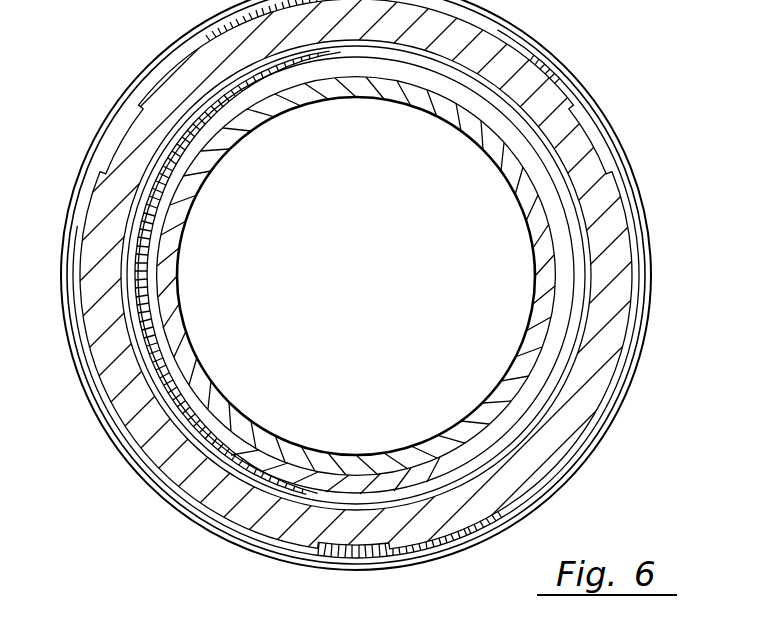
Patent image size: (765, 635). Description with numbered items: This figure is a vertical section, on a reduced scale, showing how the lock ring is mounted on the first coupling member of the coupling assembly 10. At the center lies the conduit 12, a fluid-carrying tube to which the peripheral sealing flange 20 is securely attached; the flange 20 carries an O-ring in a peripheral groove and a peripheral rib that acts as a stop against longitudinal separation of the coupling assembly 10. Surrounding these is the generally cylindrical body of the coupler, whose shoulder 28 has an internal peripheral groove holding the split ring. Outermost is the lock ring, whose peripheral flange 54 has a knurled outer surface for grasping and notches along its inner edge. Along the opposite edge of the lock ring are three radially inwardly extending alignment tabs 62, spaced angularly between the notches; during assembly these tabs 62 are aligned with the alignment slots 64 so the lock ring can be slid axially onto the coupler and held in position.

The coupling assembly 10 is at (382, 317).
The conduit 12 is at (167, 297).
The peripheral sealing flange 20 is at (167, 367).
The shoulder 28 is at (218, 493).
The peripheral flange 54 is at (628, 385).
The alignment tabs 62 is at (128, 126).
The alignment slots 64 is at (118, 148).